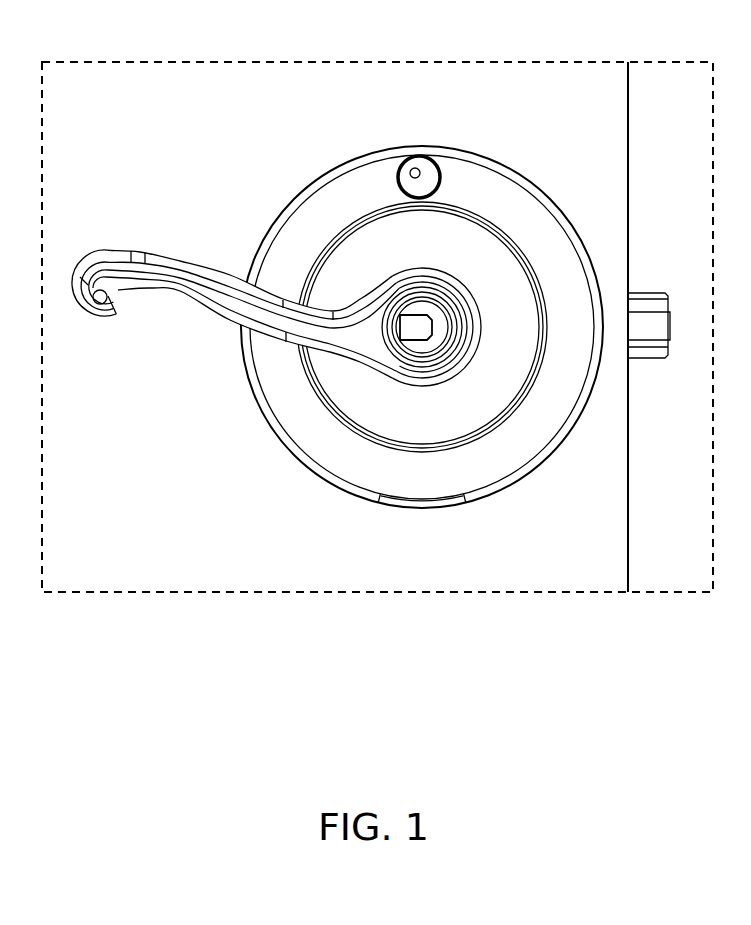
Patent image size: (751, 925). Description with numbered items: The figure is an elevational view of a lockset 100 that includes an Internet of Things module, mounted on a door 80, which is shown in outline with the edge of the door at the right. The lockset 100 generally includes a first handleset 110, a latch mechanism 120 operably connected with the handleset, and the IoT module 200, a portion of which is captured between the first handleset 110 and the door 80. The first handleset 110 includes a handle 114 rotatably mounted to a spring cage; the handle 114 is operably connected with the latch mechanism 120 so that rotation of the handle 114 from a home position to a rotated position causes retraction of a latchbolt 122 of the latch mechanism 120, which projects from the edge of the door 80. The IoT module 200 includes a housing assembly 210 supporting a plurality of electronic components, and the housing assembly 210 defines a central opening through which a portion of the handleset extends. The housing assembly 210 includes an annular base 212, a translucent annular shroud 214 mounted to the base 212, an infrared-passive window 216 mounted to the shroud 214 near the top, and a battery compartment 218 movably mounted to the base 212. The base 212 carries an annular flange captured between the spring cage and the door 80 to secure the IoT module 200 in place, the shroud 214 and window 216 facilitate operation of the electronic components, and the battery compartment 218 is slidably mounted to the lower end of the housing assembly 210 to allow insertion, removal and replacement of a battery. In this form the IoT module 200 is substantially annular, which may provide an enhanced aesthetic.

The door 80 is at (572, 74).
The lockset 100 is at (258, 128).
The first handleset 110 is at (217, 195).
The handle 114 is at (189, 295).
The latch mechanism 120 is at (657, 272).
The latchbolt 122 is at (668, 360).
The IoT module 200 is at (570, 462).
The housing assembly 210 is at (292, 480).
The annular base 212 is at (581, 194).
The translucent annular shroud 214 is at (505, 184).
The infrared-passive window 216 is at (420, 157).
The battery compartment 218 is at (420, 510).